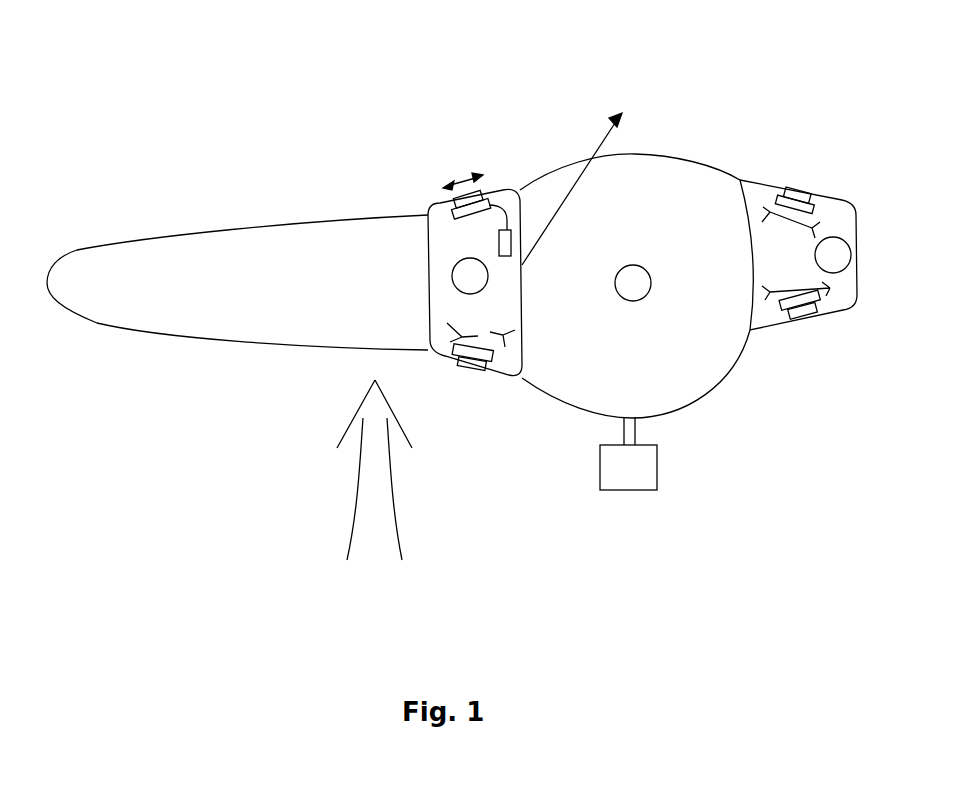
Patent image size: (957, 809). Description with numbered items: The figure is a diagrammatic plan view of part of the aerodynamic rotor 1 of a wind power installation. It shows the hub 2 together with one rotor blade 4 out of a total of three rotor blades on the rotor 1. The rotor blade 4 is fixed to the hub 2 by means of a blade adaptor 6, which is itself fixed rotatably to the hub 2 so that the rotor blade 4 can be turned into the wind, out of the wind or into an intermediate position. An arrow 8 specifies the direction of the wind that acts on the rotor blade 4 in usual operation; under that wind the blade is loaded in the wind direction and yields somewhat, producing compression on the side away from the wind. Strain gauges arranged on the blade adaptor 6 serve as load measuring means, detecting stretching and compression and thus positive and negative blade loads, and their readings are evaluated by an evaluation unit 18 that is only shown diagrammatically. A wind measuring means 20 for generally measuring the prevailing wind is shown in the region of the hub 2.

The rotor 1 is at (507, 133).
The hub 2 is at (635, 265).
The rotor blade 4 is at (145, 257).
The blade adaptor 6 is at (642, 278).
The arrow specifying the direction of the wind 8 is at (373, 450).
The evaluation unit 18 is at (520, 233).
The wind measuring means 20 is at (643, 468).